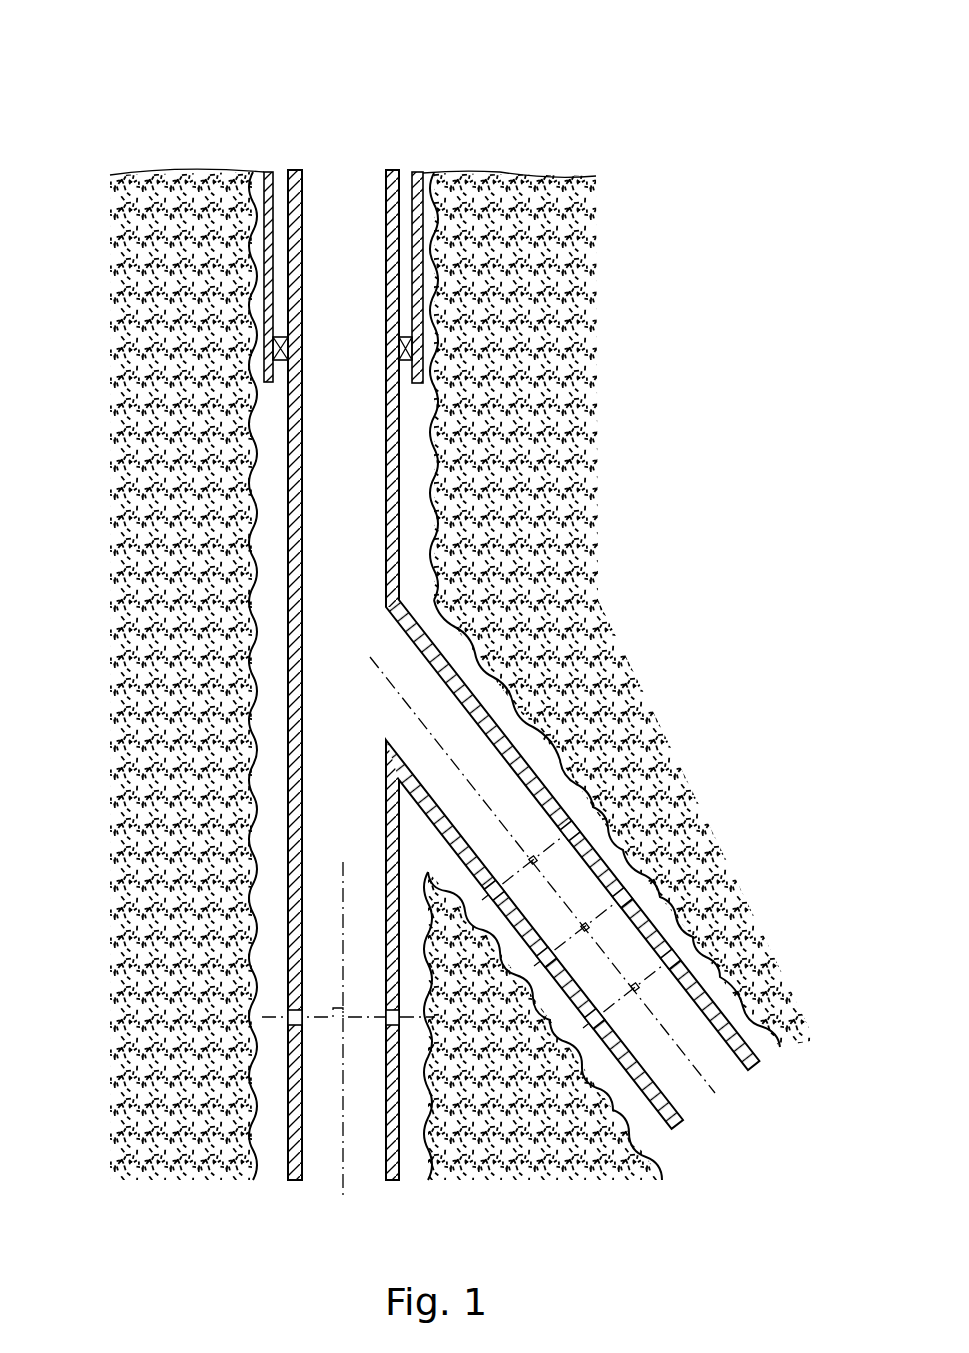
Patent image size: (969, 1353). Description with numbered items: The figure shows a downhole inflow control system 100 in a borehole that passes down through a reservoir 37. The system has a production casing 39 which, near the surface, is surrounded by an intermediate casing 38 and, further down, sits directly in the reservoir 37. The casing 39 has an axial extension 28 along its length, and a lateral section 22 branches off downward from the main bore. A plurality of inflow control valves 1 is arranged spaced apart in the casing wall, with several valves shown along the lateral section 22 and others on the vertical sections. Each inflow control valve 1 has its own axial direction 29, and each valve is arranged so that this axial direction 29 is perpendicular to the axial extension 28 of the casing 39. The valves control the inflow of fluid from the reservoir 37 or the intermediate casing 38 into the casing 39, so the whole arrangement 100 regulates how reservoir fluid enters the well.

The downhole inflow control system 100 is at (289, 100).
The reservoir 37 is at (528, 428).
The intermediate casing 38 is at (270, 269).
The casing 39 is at (292, 572).
The lateral wellbore 22 is at (484, 789).
The axial extension 28 is at (343, 863).
The axial direction 29 is at (262, 1017).
The inflow control valve 1 is at (575, 835).